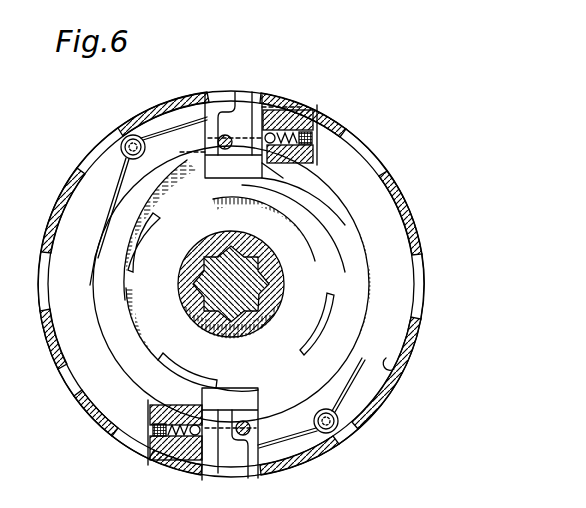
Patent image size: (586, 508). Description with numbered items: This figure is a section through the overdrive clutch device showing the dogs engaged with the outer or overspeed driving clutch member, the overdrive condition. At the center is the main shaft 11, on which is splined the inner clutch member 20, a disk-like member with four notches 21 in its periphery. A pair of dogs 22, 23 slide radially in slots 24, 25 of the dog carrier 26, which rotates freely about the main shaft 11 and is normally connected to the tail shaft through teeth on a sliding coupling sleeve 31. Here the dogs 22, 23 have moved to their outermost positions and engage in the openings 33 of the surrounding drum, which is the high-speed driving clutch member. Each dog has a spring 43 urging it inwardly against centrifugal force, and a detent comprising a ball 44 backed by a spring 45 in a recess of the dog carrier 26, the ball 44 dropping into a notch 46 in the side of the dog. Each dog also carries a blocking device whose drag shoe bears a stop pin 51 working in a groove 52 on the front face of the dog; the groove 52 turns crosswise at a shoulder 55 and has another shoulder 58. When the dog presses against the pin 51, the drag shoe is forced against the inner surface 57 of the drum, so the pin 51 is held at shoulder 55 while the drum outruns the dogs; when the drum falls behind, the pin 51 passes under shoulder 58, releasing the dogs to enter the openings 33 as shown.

The main shaft 11 is at (210, 297).
The inner clutch member 20 is at (332, 246).
The notches 21 is at (313, 197).
The dog 22 is at (291, 108).
The dog 23 is at (244, 466).
The slot 24 is at (214, 178).
The slot 25 is at (247, 386).
The dog carrier 26 is at (300, 182).
The sliding coupling sleeve 31 is at (415, 219).
The openings 33 is at (92, 152).
The spring 43 is at (116, 207).
The ball 44 is at (267, 160).
The spring 45 is at (163, 410).
The notch 46 is at (268, 98).
The stop pin 51 is at (229, 150).
The groove 52 is at (245, 106).
The shoulder 55 is at (230, 434).
The inner surface 57 is at (408, 376).
The shoulder 58 is at (232, 112).